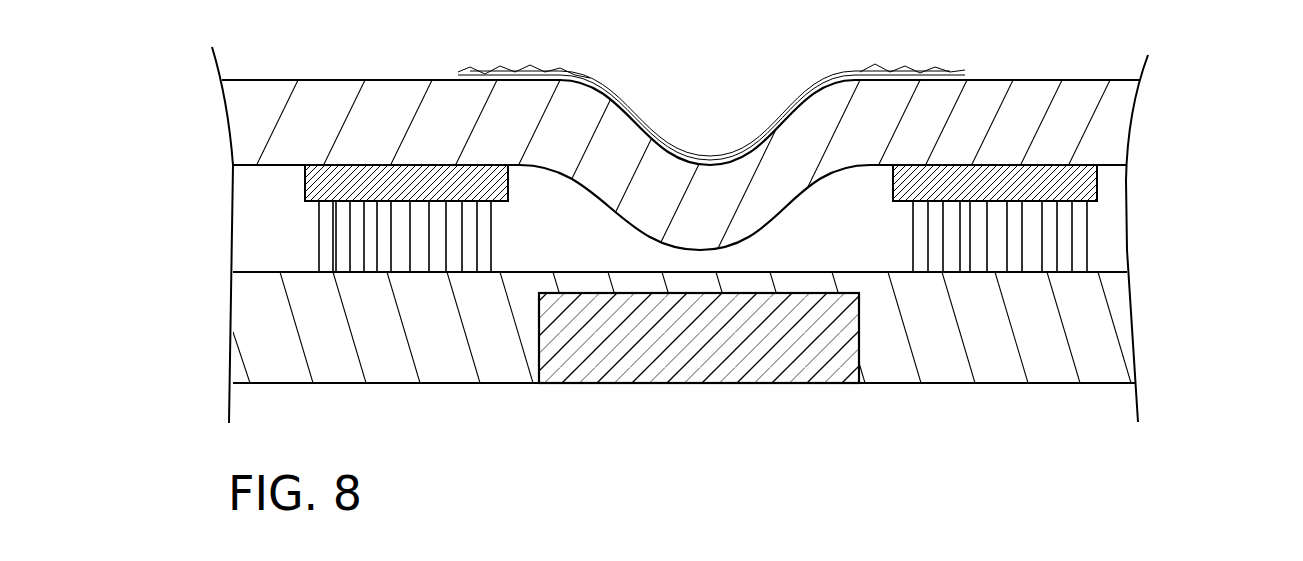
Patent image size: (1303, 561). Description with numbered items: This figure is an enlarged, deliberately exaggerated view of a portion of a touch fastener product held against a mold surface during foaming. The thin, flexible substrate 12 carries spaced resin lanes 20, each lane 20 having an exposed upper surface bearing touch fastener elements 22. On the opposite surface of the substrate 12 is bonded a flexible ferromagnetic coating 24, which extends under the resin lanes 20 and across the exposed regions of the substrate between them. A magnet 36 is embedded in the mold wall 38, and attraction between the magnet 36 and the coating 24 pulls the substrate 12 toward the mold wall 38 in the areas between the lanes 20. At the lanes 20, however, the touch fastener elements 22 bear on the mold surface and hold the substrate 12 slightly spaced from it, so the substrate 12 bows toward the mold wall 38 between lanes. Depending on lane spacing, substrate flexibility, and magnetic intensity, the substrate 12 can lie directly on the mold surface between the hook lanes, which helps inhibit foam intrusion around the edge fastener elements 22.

The flexible substrate 12 is at (973, 80).
The flexible ferromagnetic coating 24 is at (636, 112).
The touch fastener elements 22 is at (323, 244).
The lane 20 is at (1050, 300).
The magnet 36 is at (652, 385).
The mold wall 38 is at (1110, 332).